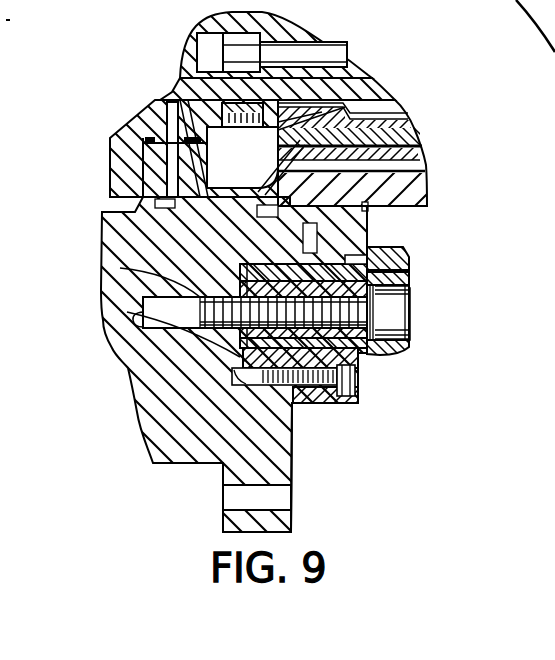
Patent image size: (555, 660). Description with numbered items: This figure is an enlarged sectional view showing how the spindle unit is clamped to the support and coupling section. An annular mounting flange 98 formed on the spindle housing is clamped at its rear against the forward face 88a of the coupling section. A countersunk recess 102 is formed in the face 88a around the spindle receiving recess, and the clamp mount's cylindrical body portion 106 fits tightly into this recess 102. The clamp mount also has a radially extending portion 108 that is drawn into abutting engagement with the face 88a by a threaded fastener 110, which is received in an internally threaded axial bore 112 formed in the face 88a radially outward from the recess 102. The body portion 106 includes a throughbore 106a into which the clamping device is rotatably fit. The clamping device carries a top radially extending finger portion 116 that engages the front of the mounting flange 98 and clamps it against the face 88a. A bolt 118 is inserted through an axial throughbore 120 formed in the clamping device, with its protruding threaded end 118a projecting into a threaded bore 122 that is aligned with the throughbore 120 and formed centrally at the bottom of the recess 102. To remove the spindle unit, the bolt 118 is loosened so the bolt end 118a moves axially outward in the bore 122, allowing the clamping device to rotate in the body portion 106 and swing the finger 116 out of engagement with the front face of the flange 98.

The annular mounting flange 98 is at (377, 230).
The radially extending finger portion 116 is at (405, 251).
The cylindrical body portion 106 is at (407, 268).
The throughbore 106a is at (403, 277).
The bolt 118 is at (374, 317).
The axial throughbore 120 is at (412, 353).
The threaded fastener 110 is at (358, 382).
The radially extending portion 108 is at (325, 400).
The forward face 88a is at (293, 463).
The internally threaded axial bore 112 is at (240, 357).
The countersunk recess 102 is at (187, 348).
The threaded bore 122 is at (133, 310).
The protruding threaded end 118a is at (120, 268).